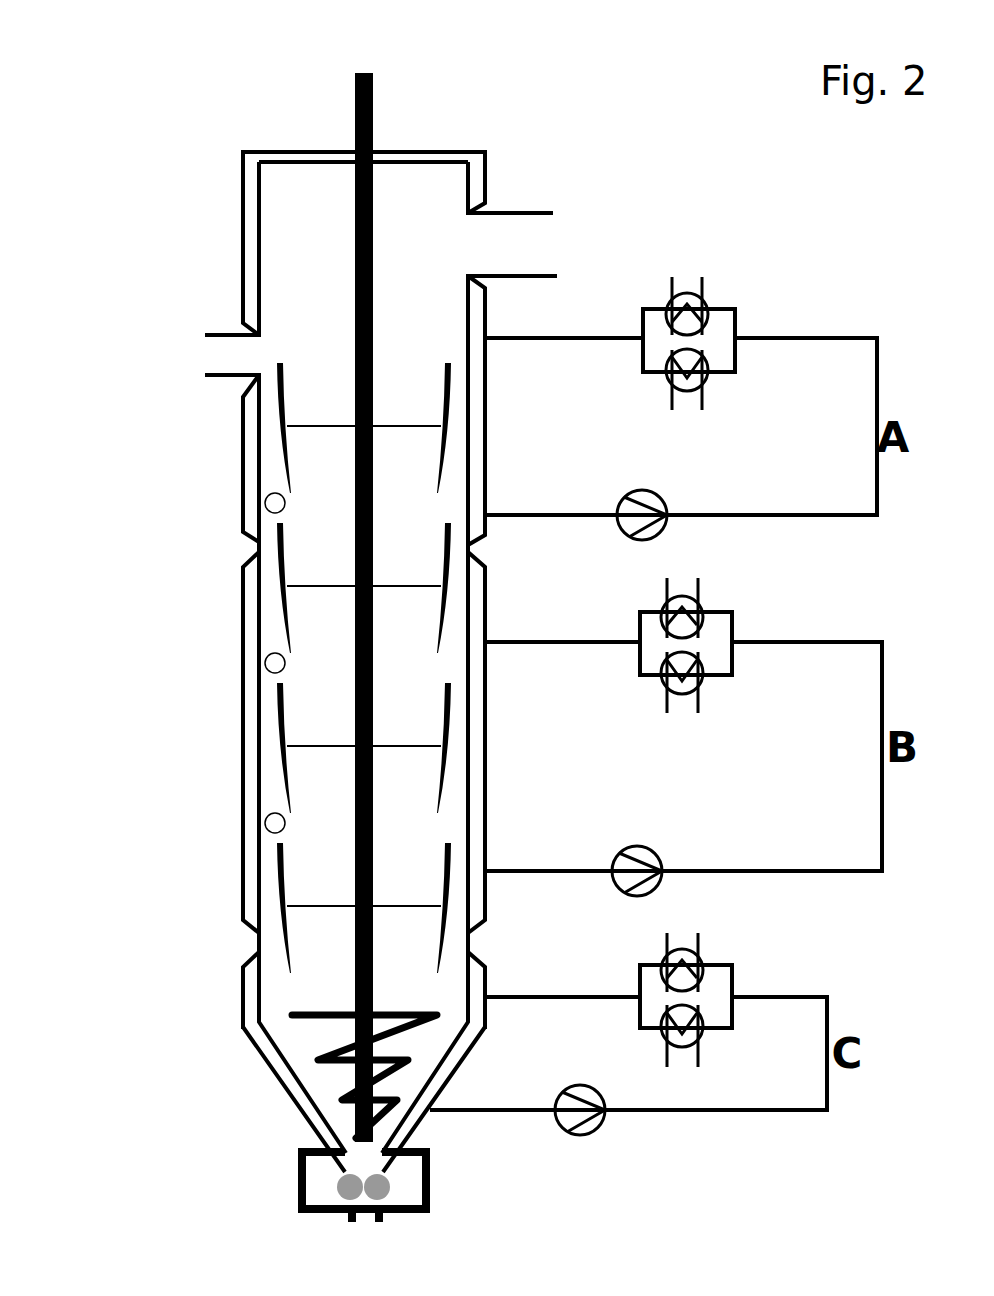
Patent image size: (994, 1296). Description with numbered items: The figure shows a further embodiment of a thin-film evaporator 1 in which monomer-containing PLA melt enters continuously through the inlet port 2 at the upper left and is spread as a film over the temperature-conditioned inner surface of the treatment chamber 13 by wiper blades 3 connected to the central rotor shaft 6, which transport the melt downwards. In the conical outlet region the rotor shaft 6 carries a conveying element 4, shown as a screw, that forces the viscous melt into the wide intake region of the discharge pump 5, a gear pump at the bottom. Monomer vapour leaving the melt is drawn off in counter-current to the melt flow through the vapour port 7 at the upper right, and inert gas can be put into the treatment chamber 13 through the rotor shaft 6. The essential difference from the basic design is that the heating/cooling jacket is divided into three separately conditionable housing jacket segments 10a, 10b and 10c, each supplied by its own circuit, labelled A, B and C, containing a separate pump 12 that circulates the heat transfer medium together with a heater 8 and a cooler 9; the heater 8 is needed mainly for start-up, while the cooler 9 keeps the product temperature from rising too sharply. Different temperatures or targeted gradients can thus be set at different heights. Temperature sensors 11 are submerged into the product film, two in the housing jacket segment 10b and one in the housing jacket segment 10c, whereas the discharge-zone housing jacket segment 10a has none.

The thin-film evaporator 1 is at (240, 150).
The inlet port 2 is at (223, 352).
The wiper blade 3 is at (255, 738).
The conveying element 4 is at (320, 1057).
The discharge pump 5 is at (310, 1190).
The rotor shaft 6 is at (373, 100).
The vapour port 7 is at (500, 245).
The heater 8 is at (710, 278).
The cooler 9 is at (693, 403).
The housing jacket segment 10a is at (270, 1072).
The housing jacket segment 10b is at (241, 606).
The housing jacket segment 10c is at (240, 250).
The temperature sensor 11 is at (241, 489).
The pump 12 is at (611, 791).
The treatment chamber 13 is at (403, 683).